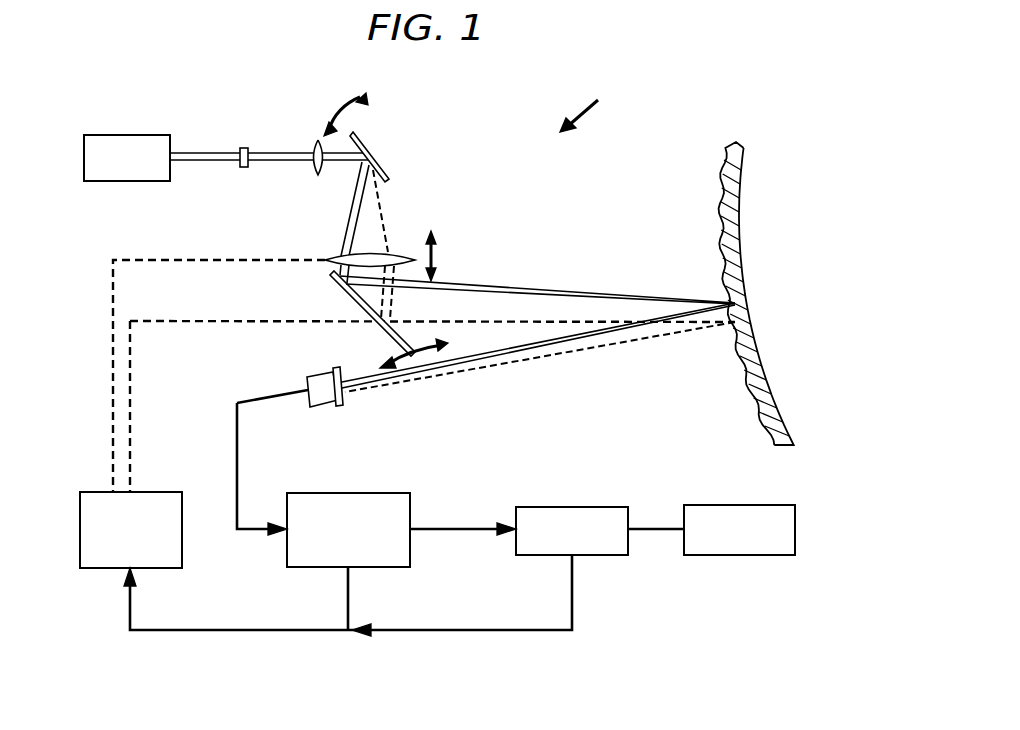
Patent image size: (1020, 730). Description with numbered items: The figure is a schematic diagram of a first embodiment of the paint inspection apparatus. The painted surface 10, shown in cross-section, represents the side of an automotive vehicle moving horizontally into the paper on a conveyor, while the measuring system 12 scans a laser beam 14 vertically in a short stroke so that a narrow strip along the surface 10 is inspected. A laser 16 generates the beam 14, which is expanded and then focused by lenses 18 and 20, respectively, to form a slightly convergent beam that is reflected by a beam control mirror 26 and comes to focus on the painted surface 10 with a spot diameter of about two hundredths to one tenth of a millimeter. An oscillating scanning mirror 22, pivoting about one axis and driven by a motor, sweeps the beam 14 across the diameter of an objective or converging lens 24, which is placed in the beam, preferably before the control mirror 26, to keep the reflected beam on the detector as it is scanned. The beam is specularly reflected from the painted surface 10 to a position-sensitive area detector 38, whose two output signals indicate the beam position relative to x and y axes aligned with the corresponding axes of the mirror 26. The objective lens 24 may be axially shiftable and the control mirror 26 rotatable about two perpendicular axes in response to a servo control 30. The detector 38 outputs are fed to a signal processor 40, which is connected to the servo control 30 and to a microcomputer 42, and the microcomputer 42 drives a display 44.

The painted surface 10 is at (760, 338).
The measuring system 12 is at (592, 107).
The laser beam 14 is at (592, 289).
The laser 16 is at (129, 135).
The lens 18 is at (243, 149).
The lens 20 is at (315, 147).
The scanning mirror 22 is at (353, 132).
The objective lens 24 is at (385, 250).
The beam control mirror 26 is at (334, 273).
The servo control 30 is at (150, 492).
The area detector 38 is at (330, 407).
The signal processor 40 is at (384, 493).
The microcomputer 42 is at (597, 507).
The display 44 is at (766, 505).